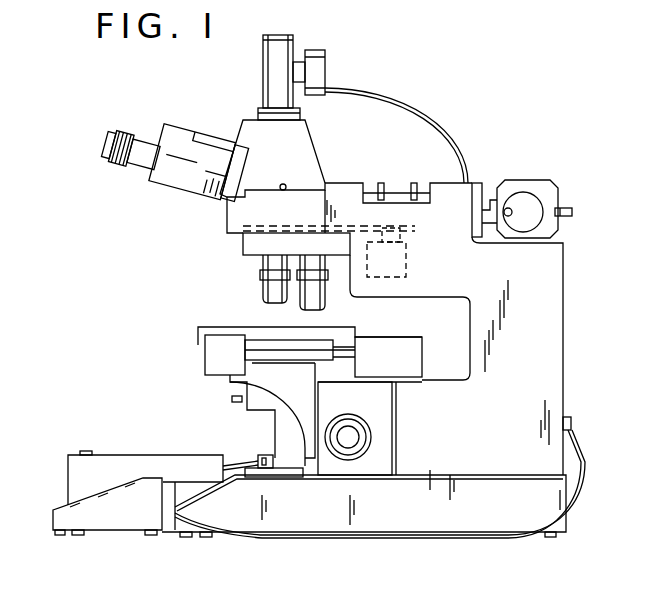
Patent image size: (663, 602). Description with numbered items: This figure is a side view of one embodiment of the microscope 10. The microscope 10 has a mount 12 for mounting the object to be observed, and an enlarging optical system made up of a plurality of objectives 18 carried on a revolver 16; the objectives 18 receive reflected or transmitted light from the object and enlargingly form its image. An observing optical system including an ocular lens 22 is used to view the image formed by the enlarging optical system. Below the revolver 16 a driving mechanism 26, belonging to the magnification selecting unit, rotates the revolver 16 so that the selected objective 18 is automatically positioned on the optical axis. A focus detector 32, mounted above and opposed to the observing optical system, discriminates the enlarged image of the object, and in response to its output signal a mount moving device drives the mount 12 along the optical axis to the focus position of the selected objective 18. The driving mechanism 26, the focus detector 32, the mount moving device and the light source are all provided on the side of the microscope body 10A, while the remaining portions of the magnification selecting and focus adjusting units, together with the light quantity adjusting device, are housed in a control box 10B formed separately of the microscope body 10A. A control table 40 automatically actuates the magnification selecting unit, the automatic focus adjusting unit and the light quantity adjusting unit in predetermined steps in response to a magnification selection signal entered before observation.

The microscope 10 is at (105, 258).
The microscope body 10A is at (553, 392).
The control box 10B is at (136, 455).
The mount 12 is at (210, 329).
The revolver 16 is at (243, 245).
The objectives 18 is at (270, 290).
The ocular lens 22 is at (128, 128).
The driving mechanism 26 is at (410, 252).
The focus detector 32 is at (322, 72).
The control table 40 is at (120, 525).